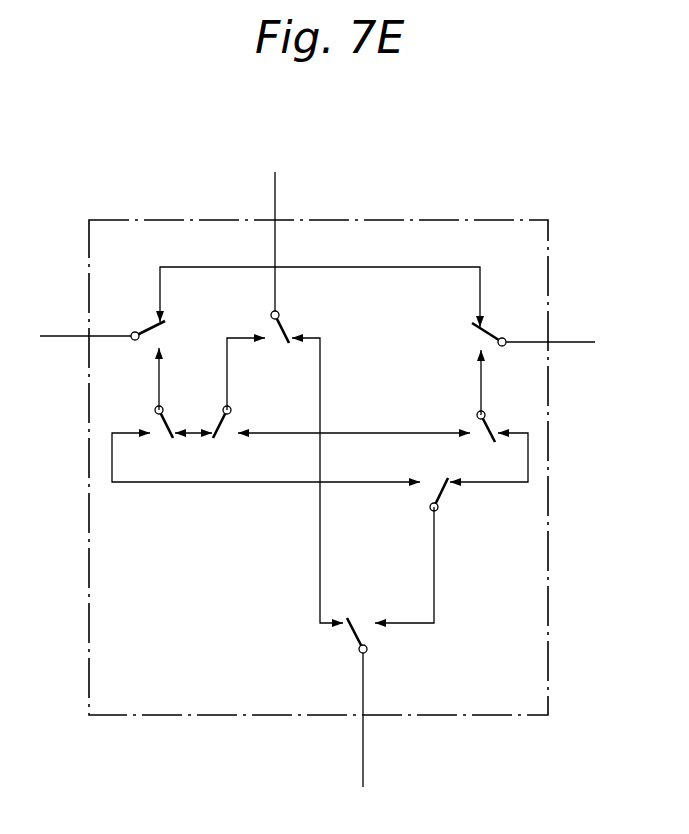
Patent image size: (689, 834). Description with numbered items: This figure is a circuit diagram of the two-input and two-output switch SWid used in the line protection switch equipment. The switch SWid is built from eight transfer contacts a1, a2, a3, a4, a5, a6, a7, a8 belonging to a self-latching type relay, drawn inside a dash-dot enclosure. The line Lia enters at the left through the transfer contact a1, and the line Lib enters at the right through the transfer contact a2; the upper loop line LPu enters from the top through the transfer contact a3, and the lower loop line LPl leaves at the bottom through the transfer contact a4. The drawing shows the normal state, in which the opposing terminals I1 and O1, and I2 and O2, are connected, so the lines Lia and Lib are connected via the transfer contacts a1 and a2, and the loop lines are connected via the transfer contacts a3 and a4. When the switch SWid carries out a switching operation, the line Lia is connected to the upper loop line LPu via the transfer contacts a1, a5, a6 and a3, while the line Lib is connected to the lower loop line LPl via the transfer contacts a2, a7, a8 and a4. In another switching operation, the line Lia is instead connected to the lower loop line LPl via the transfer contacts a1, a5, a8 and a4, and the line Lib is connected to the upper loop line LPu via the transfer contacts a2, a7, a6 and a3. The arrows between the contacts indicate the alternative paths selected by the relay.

The two-input and two-output switch SWid is at (413, 220).
The upper loop line LPu is at (276, 193).
The lower loop line LPl is at (364, 751).
The line Lia is at (86, 327).
The line Lib is at (548, 330).
The transfer contact a1 is at (133, 331).
The transfer contact a2 is at (503, 338).
The transfer contact a3 is at (280, 314).
The transfer contact a4 is at (368, 648).
The transfer contact a5 is at (164, 410).
The transfer contact a6 is at (231, 411).
The transfer contact a7 is at (484, 411).
The transfer contact a8 is at (438, 508).
The terminal I1 is at (143, 379).
The terminal I2 is at (317, 503).
The terminal O1 is at (504, 382).
The terminal O2 is at (246, 358).